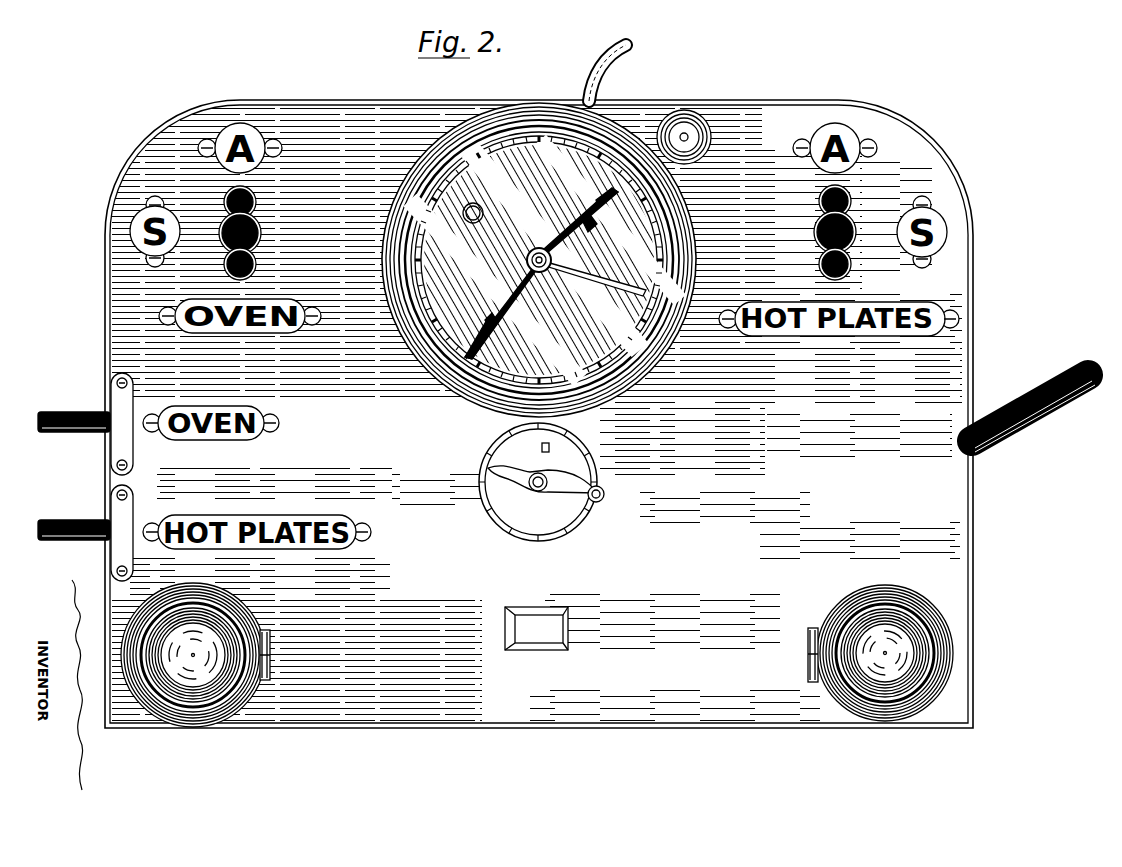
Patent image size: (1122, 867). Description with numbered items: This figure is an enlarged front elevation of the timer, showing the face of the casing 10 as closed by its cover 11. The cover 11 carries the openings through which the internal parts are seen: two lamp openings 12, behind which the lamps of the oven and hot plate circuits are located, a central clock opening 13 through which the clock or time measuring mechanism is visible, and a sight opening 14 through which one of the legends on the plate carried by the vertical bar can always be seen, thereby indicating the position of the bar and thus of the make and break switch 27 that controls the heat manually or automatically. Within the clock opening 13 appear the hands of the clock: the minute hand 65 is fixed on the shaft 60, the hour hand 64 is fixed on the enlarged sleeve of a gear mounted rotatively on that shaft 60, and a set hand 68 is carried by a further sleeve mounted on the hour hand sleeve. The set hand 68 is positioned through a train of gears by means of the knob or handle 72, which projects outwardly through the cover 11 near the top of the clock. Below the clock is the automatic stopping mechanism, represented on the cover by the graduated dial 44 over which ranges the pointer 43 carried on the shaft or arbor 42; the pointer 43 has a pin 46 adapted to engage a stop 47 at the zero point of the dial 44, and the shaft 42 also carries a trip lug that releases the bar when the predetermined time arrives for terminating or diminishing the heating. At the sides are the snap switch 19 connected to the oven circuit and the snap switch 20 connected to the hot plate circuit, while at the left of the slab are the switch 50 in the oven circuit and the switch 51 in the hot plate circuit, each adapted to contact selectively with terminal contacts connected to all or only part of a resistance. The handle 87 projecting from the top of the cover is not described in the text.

The casing 10 is at (975, 346).
The cover 11 is at (690, 504).
The lamp openings 12 is at (199, 718).
The clock opening 13 is at (540, 260).
The sight opening 14 is at (570, 632).
The snap switch 19 is at (228, 228).
The snap switch 20 is at (855, 225).
The make and break switch 27 is at (1025, 432).
The shaft or arbor 42 is at (530, 492).
The pointer 43 is at (538, 492).
The graduated dial 44 is at (594, 505).
The pin 46 is at (478, 496).
The stop 47 is at (560, 439).
The switch 50 is at (84, 412).
The switch 51 is at (84, 520).
The shaft 60 is at (485, 221).
The hour hand 64 is at (545, 260).
The minute hand 65 is at (512, 300).
The set hand 68 is at (590, 283).
The knob or handle 72 is at (702, 120).
The handle 87 is at (603, 70).